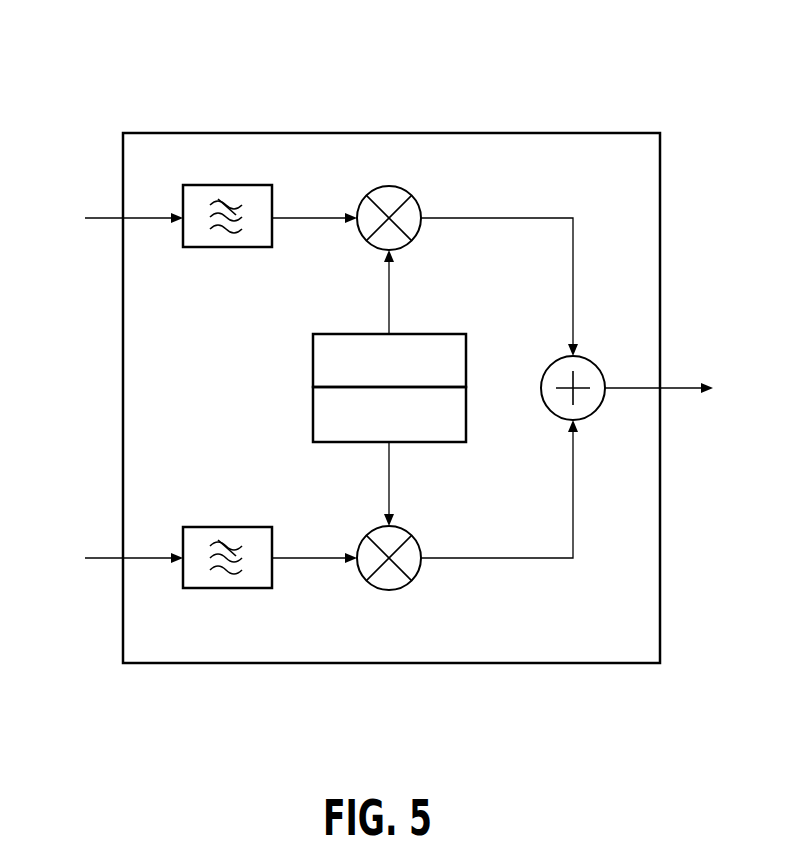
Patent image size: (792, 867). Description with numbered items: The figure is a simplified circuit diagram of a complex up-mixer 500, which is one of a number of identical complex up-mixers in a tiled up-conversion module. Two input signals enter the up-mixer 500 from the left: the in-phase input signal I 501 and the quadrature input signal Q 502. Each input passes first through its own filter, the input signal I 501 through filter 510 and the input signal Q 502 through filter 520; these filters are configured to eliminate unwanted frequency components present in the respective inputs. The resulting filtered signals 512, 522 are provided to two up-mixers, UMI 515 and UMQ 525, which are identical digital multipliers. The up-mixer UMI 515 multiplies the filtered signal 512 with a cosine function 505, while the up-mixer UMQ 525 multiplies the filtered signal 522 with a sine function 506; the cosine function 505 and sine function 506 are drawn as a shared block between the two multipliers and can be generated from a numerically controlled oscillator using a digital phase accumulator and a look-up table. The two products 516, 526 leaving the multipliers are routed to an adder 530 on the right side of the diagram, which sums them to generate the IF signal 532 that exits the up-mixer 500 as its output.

The complex up-mixer 500 is at (456, 80).
The input signal I 501 is at (120, 207).
The input signal Q 502 is at (118, 552).
The cosine function 505 is at (325, 363).
The sine function 506 is at (330, 415).
The filter 510 is at (227, 203).
The filtered signal 512 is at (314, 208).
The up-mixer UMI 515 is at (409, 200).
The product 516 is at (499, 274).
The filter 520 is at (227, 543).
The filtered signal 522 is at (314, 547).
The up-mixer UMQ 525 is at (401, 571).
The product 526 is at (499, 490).
The adder 530 is at (583, 378).
The IF signal 532 is at (680, 379).